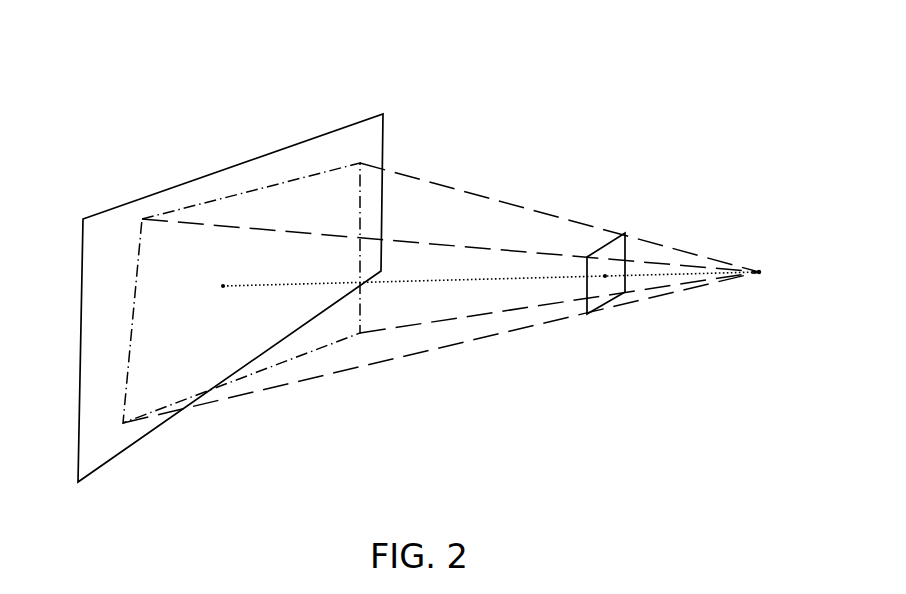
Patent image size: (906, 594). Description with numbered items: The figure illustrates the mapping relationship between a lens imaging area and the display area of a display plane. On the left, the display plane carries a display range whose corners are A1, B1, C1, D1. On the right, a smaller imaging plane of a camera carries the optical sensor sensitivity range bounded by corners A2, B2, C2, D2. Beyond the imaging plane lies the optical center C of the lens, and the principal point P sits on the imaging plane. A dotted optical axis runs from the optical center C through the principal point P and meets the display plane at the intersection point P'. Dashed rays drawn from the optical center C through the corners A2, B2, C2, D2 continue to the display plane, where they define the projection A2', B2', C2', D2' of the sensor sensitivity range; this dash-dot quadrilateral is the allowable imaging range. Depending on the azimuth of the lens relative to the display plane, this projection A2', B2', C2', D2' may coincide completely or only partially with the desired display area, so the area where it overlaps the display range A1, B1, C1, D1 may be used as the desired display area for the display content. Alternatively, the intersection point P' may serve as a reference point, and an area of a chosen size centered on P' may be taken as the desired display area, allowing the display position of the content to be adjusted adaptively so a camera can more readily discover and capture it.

The corner of display range A1 is at (56, 222).
The corner of display range B1 is at (400, 110).
The corner of display range C1 is at (79, 497).
The corner of display range D1 is at (398, 270).
The corner of optical sensor sensitivity range A2 is at (576, 243).
The corner of optical sensor sensitivity range B2 is at (636, 228).
The corner of optical sensor sensitivity range C2 is at (584, 332).
The corner of optical sensor sensitivity range D2 is at (641, 296).
The corner of projected allowable imaging range A2' is at (114, 222).
The corner of projected allowable imaging range B2' is at (363, 155).
The corner of projected allowable imaging range C2' is at (99, 441).
The corner of projected allowable imaging range D2' is at (367, 350).
The principal point P is at (604, 285).
The intersection point P' is at (212, 288).
The optical center C is at (768, 276).